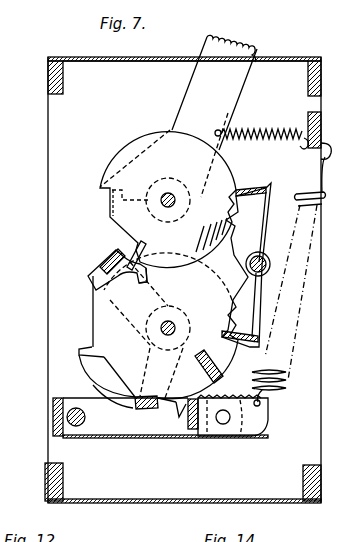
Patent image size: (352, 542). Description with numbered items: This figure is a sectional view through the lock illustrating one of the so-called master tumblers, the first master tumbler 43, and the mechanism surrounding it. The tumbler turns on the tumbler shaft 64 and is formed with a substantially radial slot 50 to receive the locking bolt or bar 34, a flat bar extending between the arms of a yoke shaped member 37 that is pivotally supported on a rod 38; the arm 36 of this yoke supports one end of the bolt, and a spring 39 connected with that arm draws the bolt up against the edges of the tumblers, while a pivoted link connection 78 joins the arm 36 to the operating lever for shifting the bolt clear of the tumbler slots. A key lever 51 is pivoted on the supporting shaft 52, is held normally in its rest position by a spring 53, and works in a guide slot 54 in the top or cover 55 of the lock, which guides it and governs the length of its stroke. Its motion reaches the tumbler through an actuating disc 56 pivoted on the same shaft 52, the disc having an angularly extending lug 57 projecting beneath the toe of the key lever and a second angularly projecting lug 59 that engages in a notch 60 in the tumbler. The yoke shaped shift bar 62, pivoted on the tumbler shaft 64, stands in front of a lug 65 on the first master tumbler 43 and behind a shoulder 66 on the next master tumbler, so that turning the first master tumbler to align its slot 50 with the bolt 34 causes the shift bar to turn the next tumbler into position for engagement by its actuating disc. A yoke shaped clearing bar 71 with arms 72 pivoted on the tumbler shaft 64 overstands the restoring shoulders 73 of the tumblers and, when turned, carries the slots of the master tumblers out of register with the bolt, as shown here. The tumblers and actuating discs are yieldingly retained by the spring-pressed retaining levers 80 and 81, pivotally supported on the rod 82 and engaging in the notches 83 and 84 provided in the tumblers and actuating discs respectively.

The top or cover 55 is at (100, 57).
The guide slots 54 is at (158, 63).
The yoke shaped member 37 is at (53, 411).
The rod 38 is at (79, 427).
The spring 39 is at (291, 300).
The key levers 51 is at (232, 84).
The springs 53 is at (264, 136).
The actuators 56 is at (126, 146).
The angularly extending lug 57 is at (108, 208).
The supporting shaft 52 is at (171, 196).
The second angularly projecting lug 59 is at (152, 245).
The clearing bar 71 is at (109, 262).
The notch 60 is at (96, 288).
The arms 72 is at (100, 296).
The restoring shoulders 73 is at (82, 354).
The first master tumbler 43 is at (158, 326).
The tumbler shaft 64 is at (176, 324).
The retaining lever 80 is at (260, 293).
The notch 84 is at (256, 188).
The retaining lever 81 is at (268, 227).
The rod 82 is at (270, 265).
The notch 83 is at (245, 338).
The radial slot 50 is at (220, 373).
The pivoted link connection 78 is at (233, 401).
The arm 36 is at (242, 434).
The locking bolt or bar 34 is at (184, 428).
The shift bar 62 is at (147, 408).
The lug 65 is at (177, 413).
The shoulder 66 is at (134, 408).